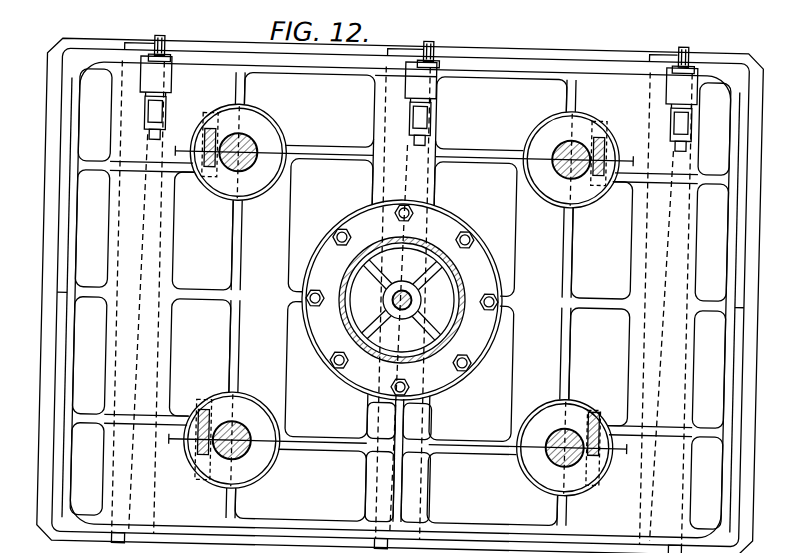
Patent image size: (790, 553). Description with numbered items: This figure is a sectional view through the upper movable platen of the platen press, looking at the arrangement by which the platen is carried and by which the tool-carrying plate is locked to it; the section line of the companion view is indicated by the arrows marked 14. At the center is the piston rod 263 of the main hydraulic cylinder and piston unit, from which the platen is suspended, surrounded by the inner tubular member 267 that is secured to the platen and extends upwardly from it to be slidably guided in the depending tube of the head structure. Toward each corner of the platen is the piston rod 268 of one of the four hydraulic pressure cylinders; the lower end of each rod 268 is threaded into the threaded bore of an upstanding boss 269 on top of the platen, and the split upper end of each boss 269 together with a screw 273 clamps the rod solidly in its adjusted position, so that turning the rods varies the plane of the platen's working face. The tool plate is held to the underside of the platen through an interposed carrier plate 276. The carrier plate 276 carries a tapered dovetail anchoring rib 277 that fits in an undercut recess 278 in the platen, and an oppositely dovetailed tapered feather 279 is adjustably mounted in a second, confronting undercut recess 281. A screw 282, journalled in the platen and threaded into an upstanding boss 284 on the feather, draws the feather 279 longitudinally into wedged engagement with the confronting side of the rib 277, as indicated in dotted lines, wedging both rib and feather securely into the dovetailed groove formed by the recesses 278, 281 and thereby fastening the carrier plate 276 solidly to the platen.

The section line of FIG. 14 is at (96, 141).
The piston rod 263 is at (392, 300).
The inner tubular member 267 is at (459, 327).
The piston rod 268 is at (247, 164).
The upstanding boss 269 is at (249, 196).
The screw 273 is at (198, 188).
The carrier plate 276 is at (595, 55).
The dovetail anchoring rib 277 is at (134, 47).
The undercut recess 278 is at (123, 238).
The tapered feather 279 is at (673, 342).
The second undercut recess 281 is at (156, 249).
The screw 282 is at (160, 43).
The upstanding boss 284 is at (156, 122).